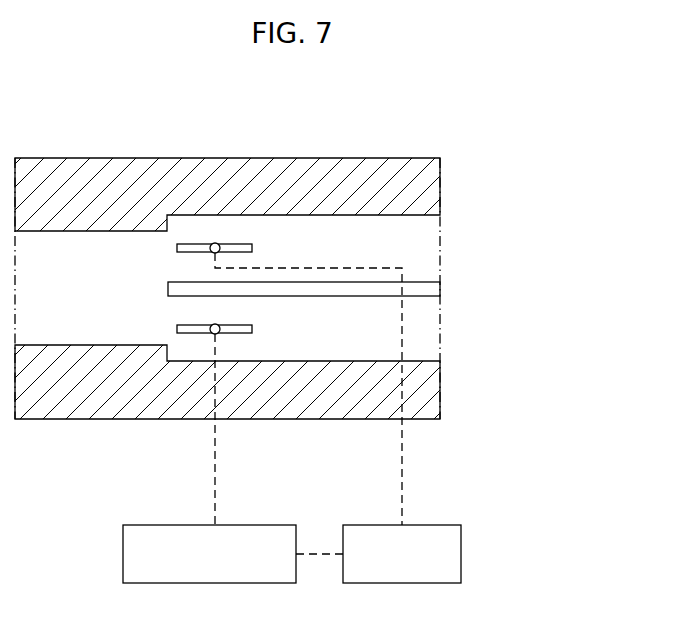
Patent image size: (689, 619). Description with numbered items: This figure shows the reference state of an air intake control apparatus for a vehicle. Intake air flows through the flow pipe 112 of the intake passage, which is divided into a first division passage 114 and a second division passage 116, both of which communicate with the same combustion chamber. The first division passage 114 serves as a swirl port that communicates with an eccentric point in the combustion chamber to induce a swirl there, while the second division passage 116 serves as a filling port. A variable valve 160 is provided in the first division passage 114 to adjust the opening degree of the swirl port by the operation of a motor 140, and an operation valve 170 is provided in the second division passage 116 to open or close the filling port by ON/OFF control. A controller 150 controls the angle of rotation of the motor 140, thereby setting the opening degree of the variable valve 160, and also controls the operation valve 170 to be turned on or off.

The flow pipe 112 is at (95, 277).
The first division passage 114 is at (309, 233).
The second division passage 116 is at (297, 346).
The motor 140 is at (461, 558).
The controller 150 is at (123, 560).
The variable valve 160 is at (236, 244).
The operation valve 170 is at (183, 333).